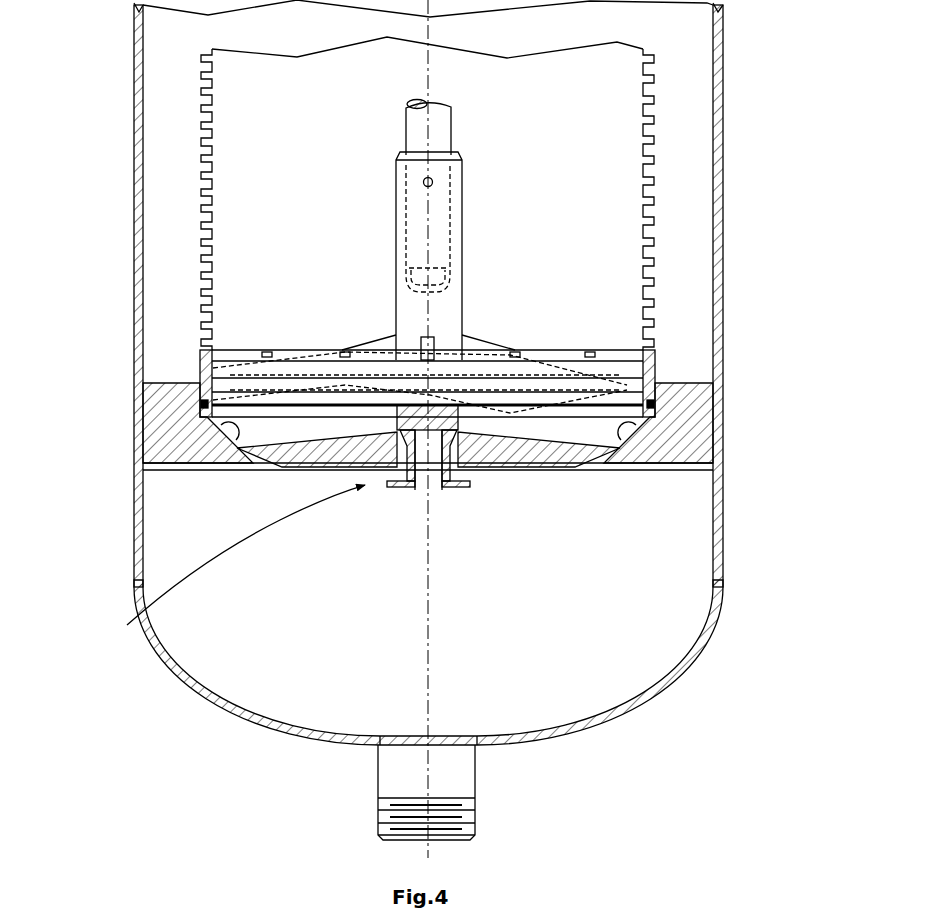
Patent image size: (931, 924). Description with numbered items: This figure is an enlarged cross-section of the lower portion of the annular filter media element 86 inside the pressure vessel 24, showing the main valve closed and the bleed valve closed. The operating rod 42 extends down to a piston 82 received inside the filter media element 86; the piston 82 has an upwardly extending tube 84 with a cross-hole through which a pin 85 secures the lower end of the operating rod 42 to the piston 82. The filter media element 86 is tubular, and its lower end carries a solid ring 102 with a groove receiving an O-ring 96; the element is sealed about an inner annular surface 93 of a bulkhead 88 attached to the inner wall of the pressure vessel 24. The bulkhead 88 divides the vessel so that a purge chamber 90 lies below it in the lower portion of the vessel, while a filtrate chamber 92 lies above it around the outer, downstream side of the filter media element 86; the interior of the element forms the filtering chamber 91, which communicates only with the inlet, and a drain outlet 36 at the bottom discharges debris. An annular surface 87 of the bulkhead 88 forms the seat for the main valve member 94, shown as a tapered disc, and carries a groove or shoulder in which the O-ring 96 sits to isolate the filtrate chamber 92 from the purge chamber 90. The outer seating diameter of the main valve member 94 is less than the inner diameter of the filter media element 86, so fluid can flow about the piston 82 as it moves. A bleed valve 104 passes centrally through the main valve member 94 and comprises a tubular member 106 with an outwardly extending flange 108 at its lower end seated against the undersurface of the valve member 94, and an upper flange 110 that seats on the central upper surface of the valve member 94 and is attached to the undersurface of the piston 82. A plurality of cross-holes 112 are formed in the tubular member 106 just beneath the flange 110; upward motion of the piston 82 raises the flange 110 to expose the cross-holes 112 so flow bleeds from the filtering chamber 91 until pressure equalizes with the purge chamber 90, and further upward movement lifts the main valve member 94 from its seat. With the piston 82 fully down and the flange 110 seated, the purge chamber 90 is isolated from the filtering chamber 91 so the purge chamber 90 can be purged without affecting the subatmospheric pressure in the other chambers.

The pressure vessel 24 is at (133, 207).
The drain outlet 36 is at (476, 770).
The operating rod 42 is at (415, 130).
The piston 82 is at (363, 322).
The upwardly extending tube 84 is at (396, 210).
The pin 85 is at (433, 182).
The annular filter media element 86 is at (200, 118).
The annular surface 87 is at (230, 440).
The bulkhead 88 is at (167, 383).
The purge chamber 90 is at (590, 648).
The filtering chamber 91 is at (612, 210).
The filtrate chamber 92 is at (680, 282).
The inner annular surface 93 is at (657, 368).
The main valve member 94 is at (280, 467).
The O-ring 96 is at (203, 403).
The solid ring 102 is at (200, 350).
The bleed valve 104 is at (222, 561).
The tubular member 106 is at (435, 482).
The outwardly extending flange 108 is at (450, 470).
The flange 110 is at (462, 420).
The cross-holes 112 is at (590, 355).